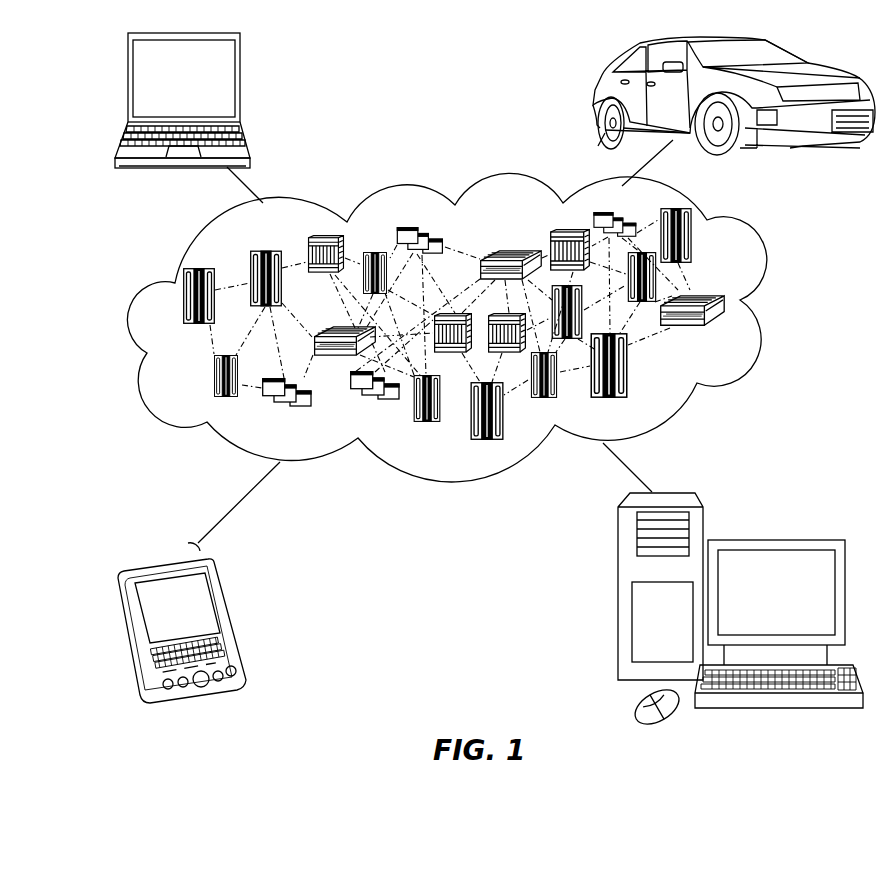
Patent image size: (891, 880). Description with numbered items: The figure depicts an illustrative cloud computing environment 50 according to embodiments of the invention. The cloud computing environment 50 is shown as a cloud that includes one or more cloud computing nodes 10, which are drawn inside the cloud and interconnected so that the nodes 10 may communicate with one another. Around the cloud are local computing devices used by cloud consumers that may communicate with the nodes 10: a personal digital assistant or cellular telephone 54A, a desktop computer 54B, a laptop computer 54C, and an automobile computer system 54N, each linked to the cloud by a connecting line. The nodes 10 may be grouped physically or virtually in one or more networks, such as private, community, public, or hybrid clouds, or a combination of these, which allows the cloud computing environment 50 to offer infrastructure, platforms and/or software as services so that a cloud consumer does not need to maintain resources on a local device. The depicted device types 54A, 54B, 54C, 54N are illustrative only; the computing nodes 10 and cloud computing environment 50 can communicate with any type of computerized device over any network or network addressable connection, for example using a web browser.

The cloud computing nodes 10 is at (733, 331).
The cloud computing environment 50 is at (772, 302).
The personal digital assistant (PDA) or cellular telephone 54A is at (230, 614).
The desktop computer 54B is at (775, 540).
The laptop computer 54C is at (242, 82).
The automobile computer system 54N is at (598, 100).